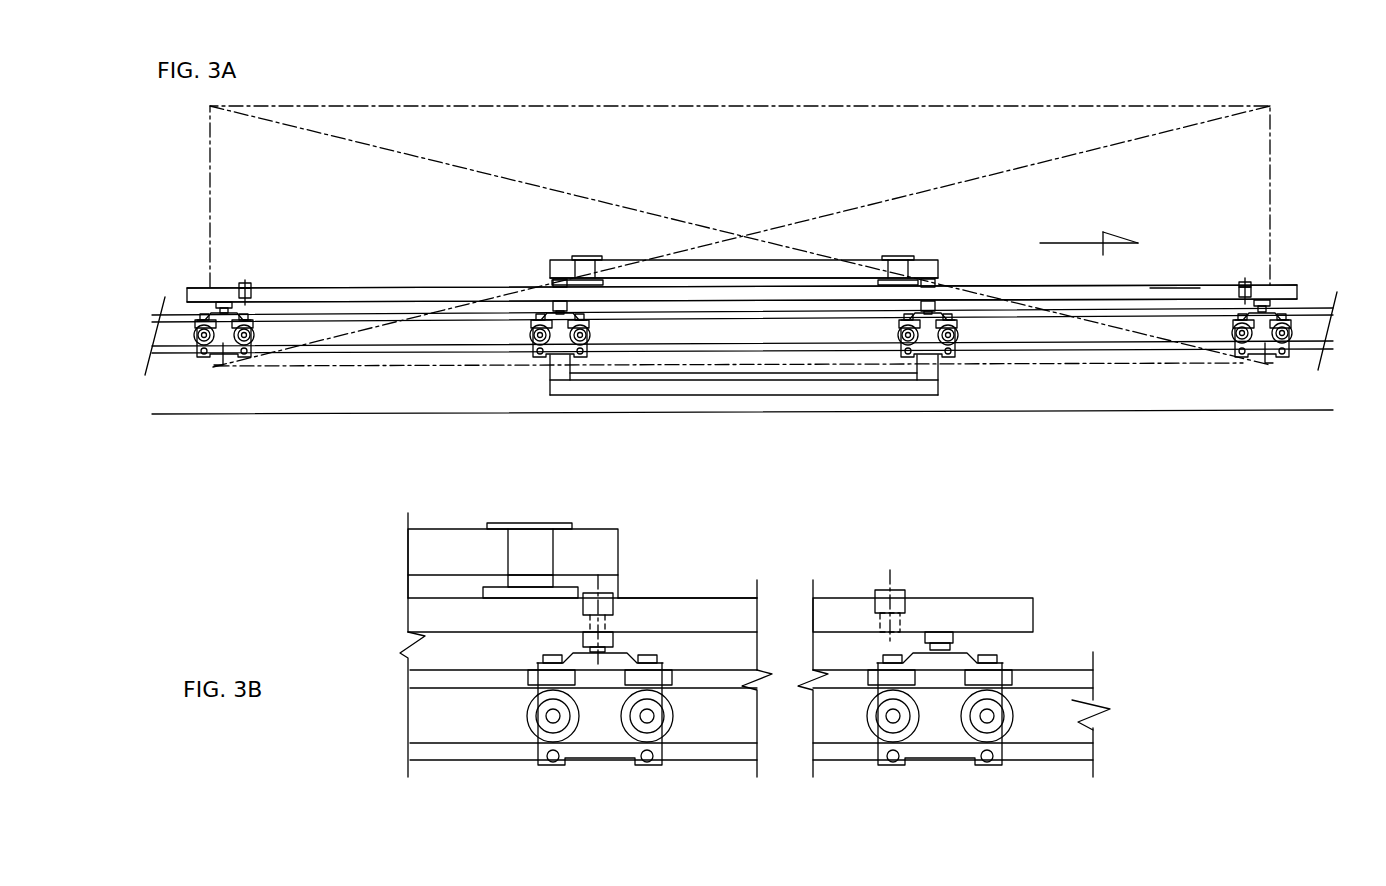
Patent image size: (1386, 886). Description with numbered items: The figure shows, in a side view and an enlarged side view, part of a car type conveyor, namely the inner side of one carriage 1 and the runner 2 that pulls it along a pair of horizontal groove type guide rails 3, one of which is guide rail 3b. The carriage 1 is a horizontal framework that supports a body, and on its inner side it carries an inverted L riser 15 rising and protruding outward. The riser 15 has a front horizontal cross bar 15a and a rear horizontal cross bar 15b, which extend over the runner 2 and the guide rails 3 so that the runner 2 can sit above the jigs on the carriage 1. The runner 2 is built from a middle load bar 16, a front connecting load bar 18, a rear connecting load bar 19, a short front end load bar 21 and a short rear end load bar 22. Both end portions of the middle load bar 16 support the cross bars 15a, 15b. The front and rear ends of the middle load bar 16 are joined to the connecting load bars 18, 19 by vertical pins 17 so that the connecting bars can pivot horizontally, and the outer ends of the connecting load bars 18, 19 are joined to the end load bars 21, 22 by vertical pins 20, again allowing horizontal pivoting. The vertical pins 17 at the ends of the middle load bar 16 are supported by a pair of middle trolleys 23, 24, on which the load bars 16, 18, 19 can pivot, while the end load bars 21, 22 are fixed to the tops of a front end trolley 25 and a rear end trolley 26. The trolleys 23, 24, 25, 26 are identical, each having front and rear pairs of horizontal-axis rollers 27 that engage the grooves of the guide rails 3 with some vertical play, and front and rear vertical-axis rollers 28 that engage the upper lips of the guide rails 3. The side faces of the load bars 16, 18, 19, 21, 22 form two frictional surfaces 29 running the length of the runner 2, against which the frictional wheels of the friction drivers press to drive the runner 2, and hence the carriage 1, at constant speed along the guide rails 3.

In FIG. 3A, the carriage 1 is at (853, 400).
In FIG. 3A, the runner 2 is at (997, 284).
In FIG. 3B, the runner 2 is at (449, 594).
In FIG. 3A, the guide rails 3 is at (1087, 352).
In FIG. 3B, the guide rails 3 is at (1068, 667).
In FIG. 3A, the guide rail 3b is at (420, 335).
In FIG. 3B, the guide rail 3b is at (1072, 700).
In FIG. 3A, the inverted L riser 15 is at (768, 260).
In FIG. 3B, the inverted L riser 15 is at (592, 528).
In FIG. 3A, the front horizontal cross bar 15a is at (898, 270).
In FIG. 3B, the front horizontal cross bar 15a is at (533, 542).
In FIG. 3A, the rear horizontal cross bar 15b is at (580, 256).
In FIG. 3A, the middle load bar 16 is at (697, 286).
In FIG. 3B, the middle load bar 16 is at (410, 572).
In FIG. 3B, the vertical pins 17 is at (608, 608).
In FIG. 3A, the front connecting load bar 18 is at (1172, 286).
In FIG. 3B, the front connecting load bar 18 is at (757, 582).
In FIG. 3A, the rear connecting load bar 19 is at (382, 296).
In FIG. 3B, the vertical pins 20 is at (908, 607).
In FIG. 3A, the front end load bar 21 is at (1278, 286).
In FIG. 3B, the front end load bar 21 is at (988, 598).
In FIG. 3A, the rear end load bar 22 is at (208, 287).
In FIG. 3A, the middle trolley 23 is at (925, 345).
In FIG. 3B, the middle trolley 23 is at (600, 728).
In FIG. 3A, the middle trolley 24 is at (550, 362).
In FIG. 3A, the front end trolley 25 is at (1262, 340).
In FIG. 3B, the front end trolley 25 is at (942, 740).
In FIG. 3A, the rear end trolley 26 is at (222, 343).
In FIG. 3B, the horizontal-axis rollers 27 is at (527, 720).
In FIG. 3B, the vertical-axis rollers 28 is at (528, 677).
In FIG. 3A, the frictional surfaces 29 is at (303, 297).
In FIG. 3B, the frictional surfaces 29 is at (420, 612).